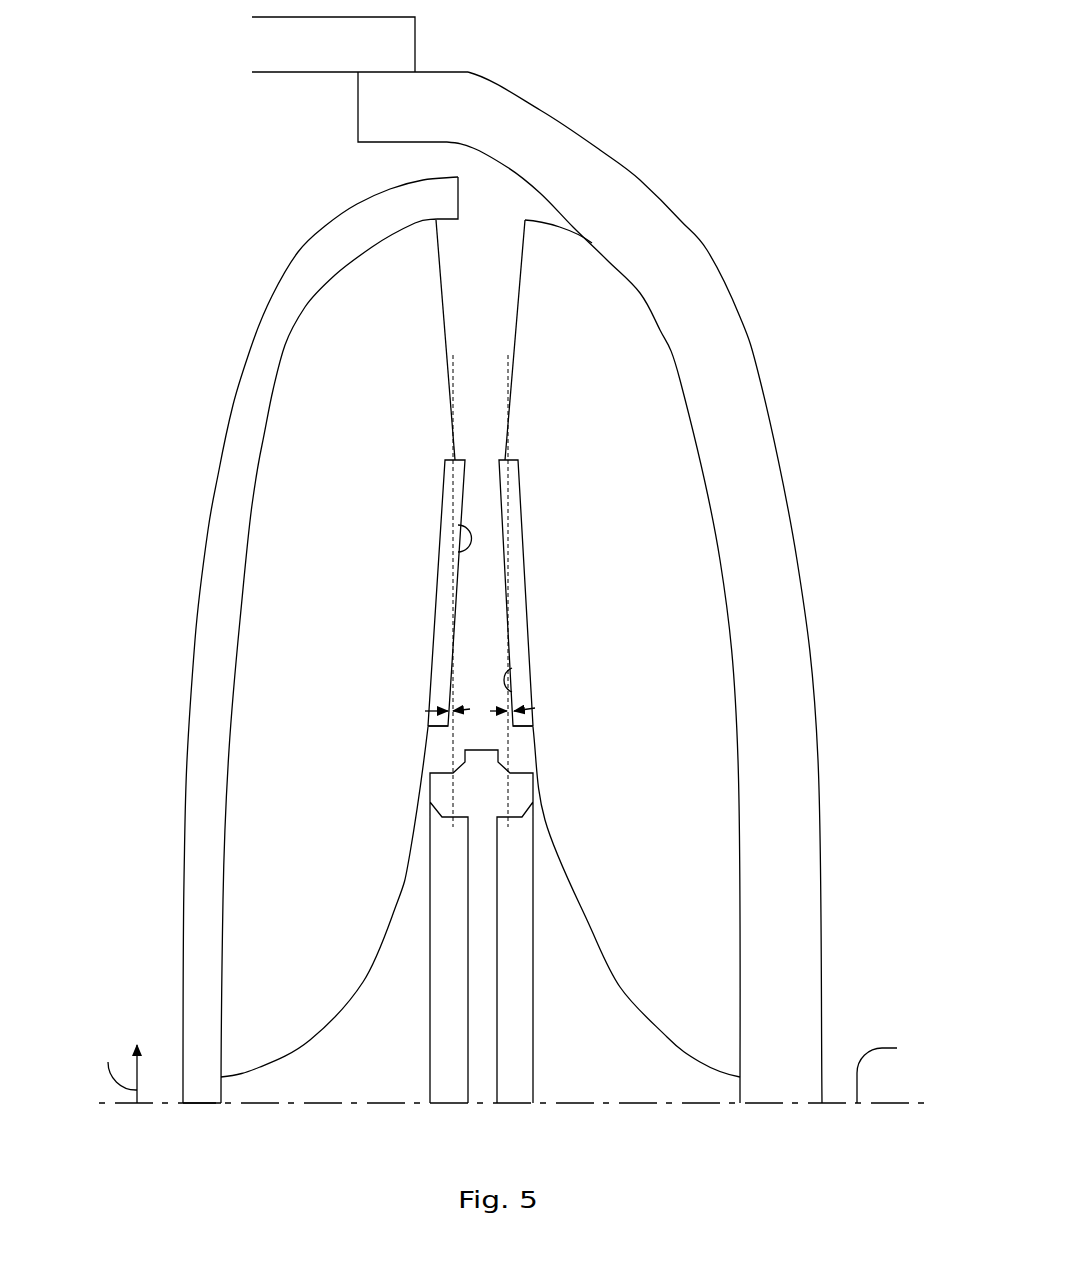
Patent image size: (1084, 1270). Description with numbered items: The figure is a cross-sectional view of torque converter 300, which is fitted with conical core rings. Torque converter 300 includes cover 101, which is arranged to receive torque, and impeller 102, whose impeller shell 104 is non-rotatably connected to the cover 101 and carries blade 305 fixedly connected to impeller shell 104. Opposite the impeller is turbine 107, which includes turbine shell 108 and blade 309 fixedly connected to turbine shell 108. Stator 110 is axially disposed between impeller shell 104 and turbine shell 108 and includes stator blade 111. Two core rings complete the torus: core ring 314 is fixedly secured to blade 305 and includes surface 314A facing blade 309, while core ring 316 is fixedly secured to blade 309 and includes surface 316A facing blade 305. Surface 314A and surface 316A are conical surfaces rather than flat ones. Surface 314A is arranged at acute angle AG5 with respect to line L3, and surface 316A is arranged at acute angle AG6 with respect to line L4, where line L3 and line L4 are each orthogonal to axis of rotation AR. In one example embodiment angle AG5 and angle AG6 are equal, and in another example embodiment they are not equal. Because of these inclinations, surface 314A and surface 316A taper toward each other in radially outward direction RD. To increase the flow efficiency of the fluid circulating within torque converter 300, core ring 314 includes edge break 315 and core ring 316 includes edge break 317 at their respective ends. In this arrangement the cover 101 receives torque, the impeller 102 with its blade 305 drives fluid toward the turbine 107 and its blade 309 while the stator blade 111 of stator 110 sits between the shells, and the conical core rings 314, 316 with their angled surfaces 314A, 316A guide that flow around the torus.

The torque converter 300 is at (227, 103).
The cover 101 is at (417, 47).
The impeller 102 is at (790, 303).
The impeller shell 104 is at (707, 252).
The turbine 107 is at (187, 257).
The turbine shell 108 is at (243, 373).
The blade 309 is at (356, 410).
The blade 305 is at (632, 648).
The line L4 is at (450, 373).
The line L3 is at (510, 373).
The core ring 316 is at (433, 650).
The surface 316A is at (458, 552).
The edge break 317 is at (430, 730).
The core ring 314 is at (518, 623).
The surface 314A is at (512, 667).
The edge break 315 is at (535, 728).
The acute angle AG6 is at (436, 711).
The acute angle AG5 is at (530, 709).
The stator 110 is at (413, 903).
The stator blade 111 is at (428, 983).
The radially outward direction RD is at (115, 1070).
The axis of rotation AR is at (893, 1072).